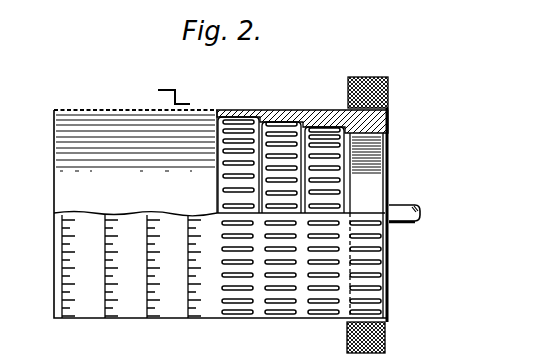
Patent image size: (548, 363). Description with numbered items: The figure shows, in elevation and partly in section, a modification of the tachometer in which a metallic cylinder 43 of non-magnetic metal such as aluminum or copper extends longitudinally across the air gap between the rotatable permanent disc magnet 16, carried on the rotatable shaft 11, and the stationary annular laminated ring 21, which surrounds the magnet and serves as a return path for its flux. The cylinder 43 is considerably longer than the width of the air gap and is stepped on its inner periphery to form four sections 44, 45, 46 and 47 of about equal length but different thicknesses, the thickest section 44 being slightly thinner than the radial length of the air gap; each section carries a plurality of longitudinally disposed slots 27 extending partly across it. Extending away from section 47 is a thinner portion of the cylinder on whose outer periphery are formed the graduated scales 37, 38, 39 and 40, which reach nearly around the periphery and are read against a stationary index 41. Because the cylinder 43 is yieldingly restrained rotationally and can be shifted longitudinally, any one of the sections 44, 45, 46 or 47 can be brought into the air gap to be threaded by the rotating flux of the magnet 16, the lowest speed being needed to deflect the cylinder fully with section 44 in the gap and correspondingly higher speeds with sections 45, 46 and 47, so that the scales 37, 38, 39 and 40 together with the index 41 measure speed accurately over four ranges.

The rotatable shaft 11 is at (403, 227).
The permanent disc magnet 16 is at (378, 180).
The annular laminated ring 21 is at (373, 77).
The longitudinally disposed slots 27 is at (230, 176).
The graduated scale 37 is at (210, 311).
The graduated scale 38 is at (168, 313).
The graduated scale 39 is at (130, 313).
The graduated scale 40 is at (87, 314).
The stationary index 41 is at (175, 91).
The metallic cylinder 43 is at (111, 109).
The cylinder section 44 is at (390, 122).
The cylinder section 45 is at (324, 111).
The cylinder section 46 is at (278, 110).
The cylinder section 47 is at (233, 111).